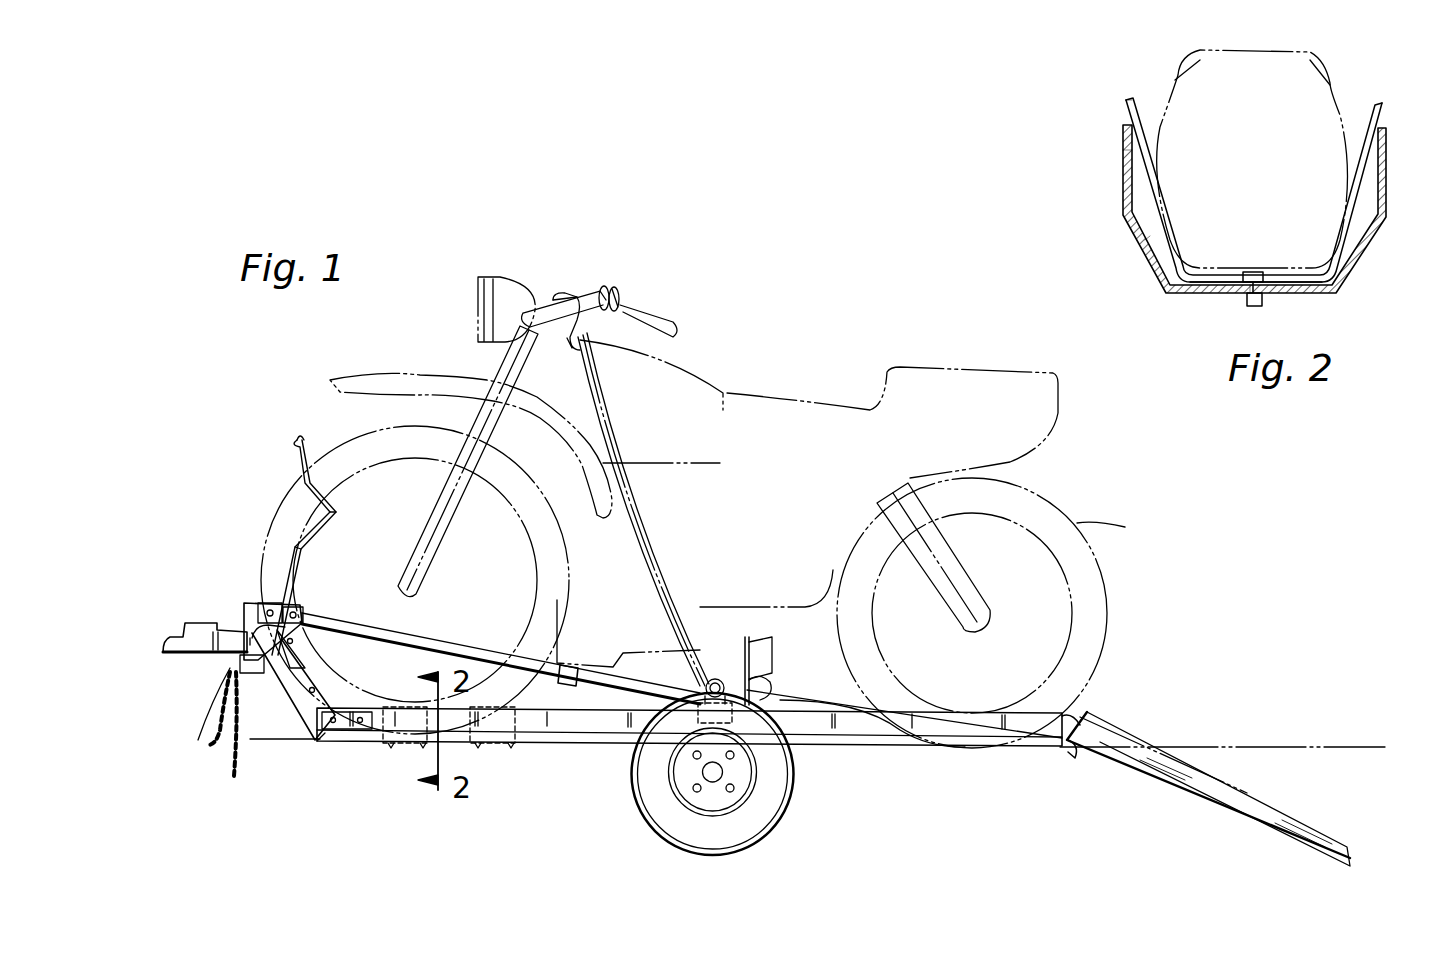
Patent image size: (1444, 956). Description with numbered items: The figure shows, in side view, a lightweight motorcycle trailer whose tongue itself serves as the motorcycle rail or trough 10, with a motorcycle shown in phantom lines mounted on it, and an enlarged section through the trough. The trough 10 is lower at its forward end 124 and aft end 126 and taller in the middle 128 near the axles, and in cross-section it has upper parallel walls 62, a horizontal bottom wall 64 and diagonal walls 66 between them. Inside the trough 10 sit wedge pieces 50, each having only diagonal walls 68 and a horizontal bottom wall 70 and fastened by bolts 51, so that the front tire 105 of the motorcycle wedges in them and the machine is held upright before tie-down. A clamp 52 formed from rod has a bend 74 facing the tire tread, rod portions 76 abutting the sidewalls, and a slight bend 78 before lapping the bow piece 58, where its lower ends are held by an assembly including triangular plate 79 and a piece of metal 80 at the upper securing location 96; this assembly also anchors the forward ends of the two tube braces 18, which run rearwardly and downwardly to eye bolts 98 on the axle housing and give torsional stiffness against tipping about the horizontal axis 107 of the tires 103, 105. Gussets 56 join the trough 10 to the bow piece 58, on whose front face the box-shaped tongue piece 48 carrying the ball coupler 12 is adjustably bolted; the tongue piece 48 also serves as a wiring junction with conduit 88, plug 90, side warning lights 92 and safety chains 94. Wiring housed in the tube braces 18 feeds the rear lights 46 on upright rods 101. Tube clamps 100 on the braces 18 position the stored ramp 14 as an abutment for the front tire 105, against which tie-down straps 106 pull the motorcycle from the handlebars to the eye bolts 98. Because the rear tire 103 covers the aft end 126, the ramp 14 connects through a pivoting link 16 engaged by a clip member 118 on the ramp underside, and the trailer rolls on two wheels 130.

In FIG. 1, the trough 10 is at (575, 733).
In FIG. 2, the trough 10 is at (1160, 288).
In FIG. 1, the ball coupler 12 is at (195, 648).
In FIG. 1, the ramp 14 is at (625, 655).
In FIG. 1, the link 16 is at (1070, 748).
In FIG. 1, the tube braces 18 is at (432, 650).
In FIG. 1, the rear light 46 is at (772, 655).
In FIG. 1, the tongue piece 48 is at (258, 640).
In FIG. 1, the wedge pieces 50 is at (412, 708).
In FIG. 2, the wedge pieces 50 is at (1130, 100).
In FIG. 2, the bolts 51 is at (1248, 305).
In FIG. 1, the clamp 52 is at (304, 486).
In FIG. 1, the gussets 56 is at (345, 700).
In FIG. 1, the bow piece 58 is at (245, 605).
In FIG. 2, the upper parallel walls 62 is at (1124, 190).
In FIG. 2, the horizontal bottom wall 64 is at (1295, 292).
In FIG. 2, the diagonal walls 66 is at (1142, 240).
In FIG. 2, the diagonal walls 68 is at (1138, 140).
In FIG. 2, the horizontal bottom wall 70 is at (1213, 272).
In FIG. 1, the bend 74 is at (298, 452).
In FIG. 1, the rod portions 76 is at (334, 510).
In FIG. 1, the bend 78 is at (305, 552).
In FIG. 1, the triangular plate 79 is at (300, 645).
In FIG. 1, the piece of metal 80 is at (262, 600).
In FIG. 1, the conduit 88 is at (220, 720).
In FIG. 1, the plug 90 is at (208, 744).
In FIG. 1, the side warning lights 92 is at (253, 675).
In FIG. 1, the chains 94 is at (234, 775).
In FIG. 1, the upper securing location 96 is at (296, 608).
In FIG. 1, the eye bolts 98 is at (712, 678).
In FIG. 1, the tube clamps 100 is at (572, 667).
In FIG. 1, the upright rods 101 is at (760, 686).
In FIG. 1, the rear motorcycle tire 103 is at (1085, 530).
In FIG. 1, the front tire 105 is at (578, 560).
In FIG. 2, the front tire 105 is at (1330, 82).
In FIG. 1, the tie-down straps 106 is at (603, 407).
In FIG. 1, the horizontal axis 107 is at (288, 742).
In FIG. 1, the clip member 118 is at (1065, 738).
In FIG. 1, the forward end 124 is at (350, 740).
In FIG. 1, the aft end 126 is at (985, 745).
In FIG. 1, the middle 128 is at (810, 700).
In FIG. 1, the wheels 130 is at (790, 792).